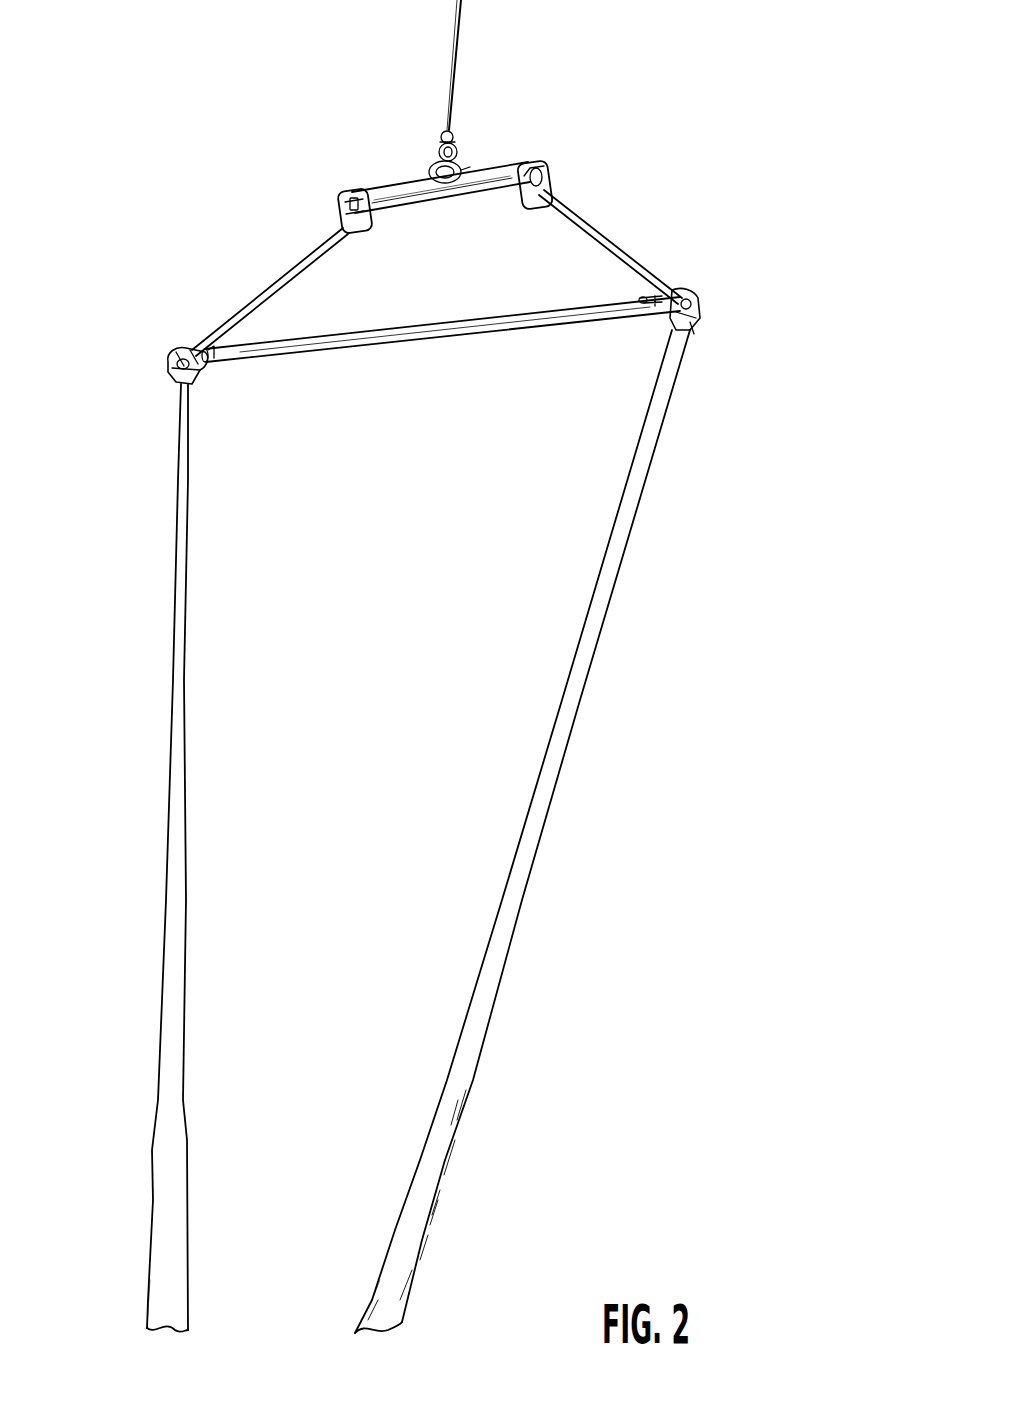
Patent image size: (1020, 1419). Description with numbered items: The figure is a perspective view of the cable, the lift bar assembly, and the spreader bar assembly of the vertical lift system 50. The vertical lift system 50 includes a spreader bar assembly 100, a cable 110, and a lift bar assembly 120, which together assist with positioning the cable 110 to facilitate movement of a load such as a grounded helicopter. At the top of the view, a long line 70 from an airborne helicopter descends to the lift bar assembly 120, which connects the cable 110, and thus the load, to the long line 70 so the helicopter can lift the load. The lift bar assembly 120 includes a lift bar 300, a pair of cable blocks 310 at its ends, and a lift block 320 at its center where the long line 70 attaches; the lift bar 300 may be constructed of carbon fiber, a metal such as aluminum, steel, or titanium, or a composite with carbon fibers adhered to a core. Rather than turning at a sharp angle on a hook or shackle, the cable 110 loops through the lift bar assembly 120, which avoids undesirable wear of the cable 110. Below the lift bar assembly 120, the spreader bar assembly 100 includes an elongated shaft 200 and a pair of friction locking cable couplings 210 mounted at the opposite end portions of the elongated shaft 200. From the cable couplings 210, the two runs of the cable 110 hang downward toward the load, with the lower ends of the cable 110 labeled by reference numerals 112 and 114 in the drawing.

The vertical lift system 50 is at (194, 158).
The long line 70 is at (446, 72).
The spreader bar assembly 100 is at (488, 320).
The cable 110 is at (182, 583).
The first strap end 112 is at (148, 1300).
The second strap end 114 is at (410, 1302).
The lift bar assembly 120 is at (556, 170).
The elongated shaft 200 is at (430, 340).
The cable couplings 210 is at (178, 356).
The lift bar 300 is at (396, 186).
The cable blocks 310 is at (356, 222).
The lift block 320 is at (462, 165).